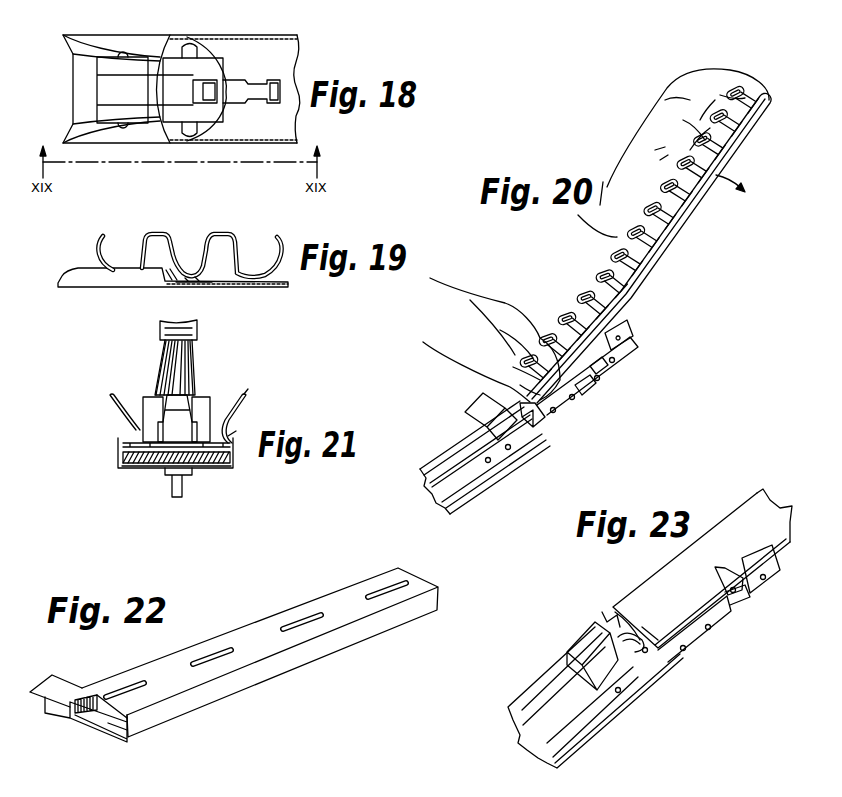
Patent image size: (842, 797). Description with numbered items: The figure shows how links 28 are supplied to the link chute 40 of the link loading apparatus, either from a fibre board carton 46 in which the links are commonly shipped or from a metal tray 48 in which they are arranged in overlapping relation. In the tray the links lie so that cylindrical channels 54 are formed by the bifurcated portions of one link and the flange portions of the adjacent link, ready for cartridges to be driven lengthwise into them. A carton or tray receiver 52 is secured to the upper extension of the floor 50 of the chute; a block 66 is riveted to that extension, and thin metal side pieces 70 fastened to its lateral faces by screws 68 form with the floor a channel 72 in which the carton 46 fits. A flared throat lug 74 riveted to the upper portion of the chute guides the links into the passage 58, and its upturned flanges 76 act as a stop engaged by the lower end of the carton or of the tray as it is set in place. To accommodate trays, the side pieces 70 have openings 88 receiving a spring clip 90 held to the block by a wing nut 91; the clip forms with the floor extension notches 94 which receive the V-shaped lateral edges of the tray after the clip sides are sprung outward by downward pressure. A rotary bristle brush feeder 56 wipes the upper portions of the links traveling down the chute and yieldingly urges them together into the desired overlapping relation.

In FIG. 18, the links 28 is at (158, 58).
In FIG. 19, the links 28 is at (230, 268).
In FIG. 21, the links 28 is at (213, 427).
In FIG. 20, the links 28 is at (574, 305).
In FIG. 23, the links 28 is at (640, 662).
In FIG. 20, the chute 40 is at (463, 486).
In FIG. 23, the chute 40 is at (520, 693).
In FIG. 22, the fibre board carton 46 is at (258, 618).
In FIG. 23, the fibre board carton 46 is at (736, 505).
In FIG. 18, the metal tray 48 is at (138, 35).
In FIG. 19, the metal tray 48 is at (145, 286).
In FIG. 21, the metal tray 48 is at (227, 420).
In FIG. 20, the metal tray 48 is at (647, 260).
In FIG. 21, the floor 50 is at (126, 450).
In FIG. 20, the floor 50 is at (455, 516).
In FIG. 23, the floor 50 is at (575, 753).
In FIG. 20, the carton or tray receiver 52 is at (572, 412).
In FIG. 23, the carton or tray receiver 52 is at (717, 638).
In FIG. 18, the cylindrical channels 54 is at (205, 115).
In FIG. 19, the cylindrical channels 54 is at (188, 236).
In FIG. 21, the rotary bristle brush feeder or impeller 56 is at (218, 349).
In FIG. 20, the passage 58 is at (435, 466).
In FIG. 23, the passage 58 is at (550, 687).
In FIG. 21, the block 66 is at (225, 467).
In FIG. 20, the block 66 is at (596, 381).
In FIG. 23, the block 66 is at (725, 617).
In FIG. 20, the screws 68 is at (552, 413).
In FIG. 23, the screws 68 is at (708, 633).
In FIG. 21, the side pieces 70 is at (247, 397).
In FIG. 20, the side pieces 70 is at (618, 331).
In FIG. 23, the side pieces 70 is at (758, 560).
In FIG. 23, the channel 72 is at (744, 592).
In FIG. 20, the flared throat lug 74 is at (487, 411).
In FIG. 23, the flared throat lug 74 is at (580, 640).
In FIG. 20, the upturned flanges 76 is at (523, 428).
In FIG. 23, the upturned flanges 76 is at (603, 612).
In FIG. 21, the openings 88 is at (234, 426).
In FIG. 20, the openings 88 is at (584, 394).
In FIG. 23, the openings 88 is at (718, 568).
In FIG. 21, the spring clip 90 is at (231, 434).
In FIG. 20, the spring clip 90 is at (600, 371).
In FIG. 21, the wing nut 91 is at (171, 493).
In FIG. 21, the notches 94 is at (134, 432).